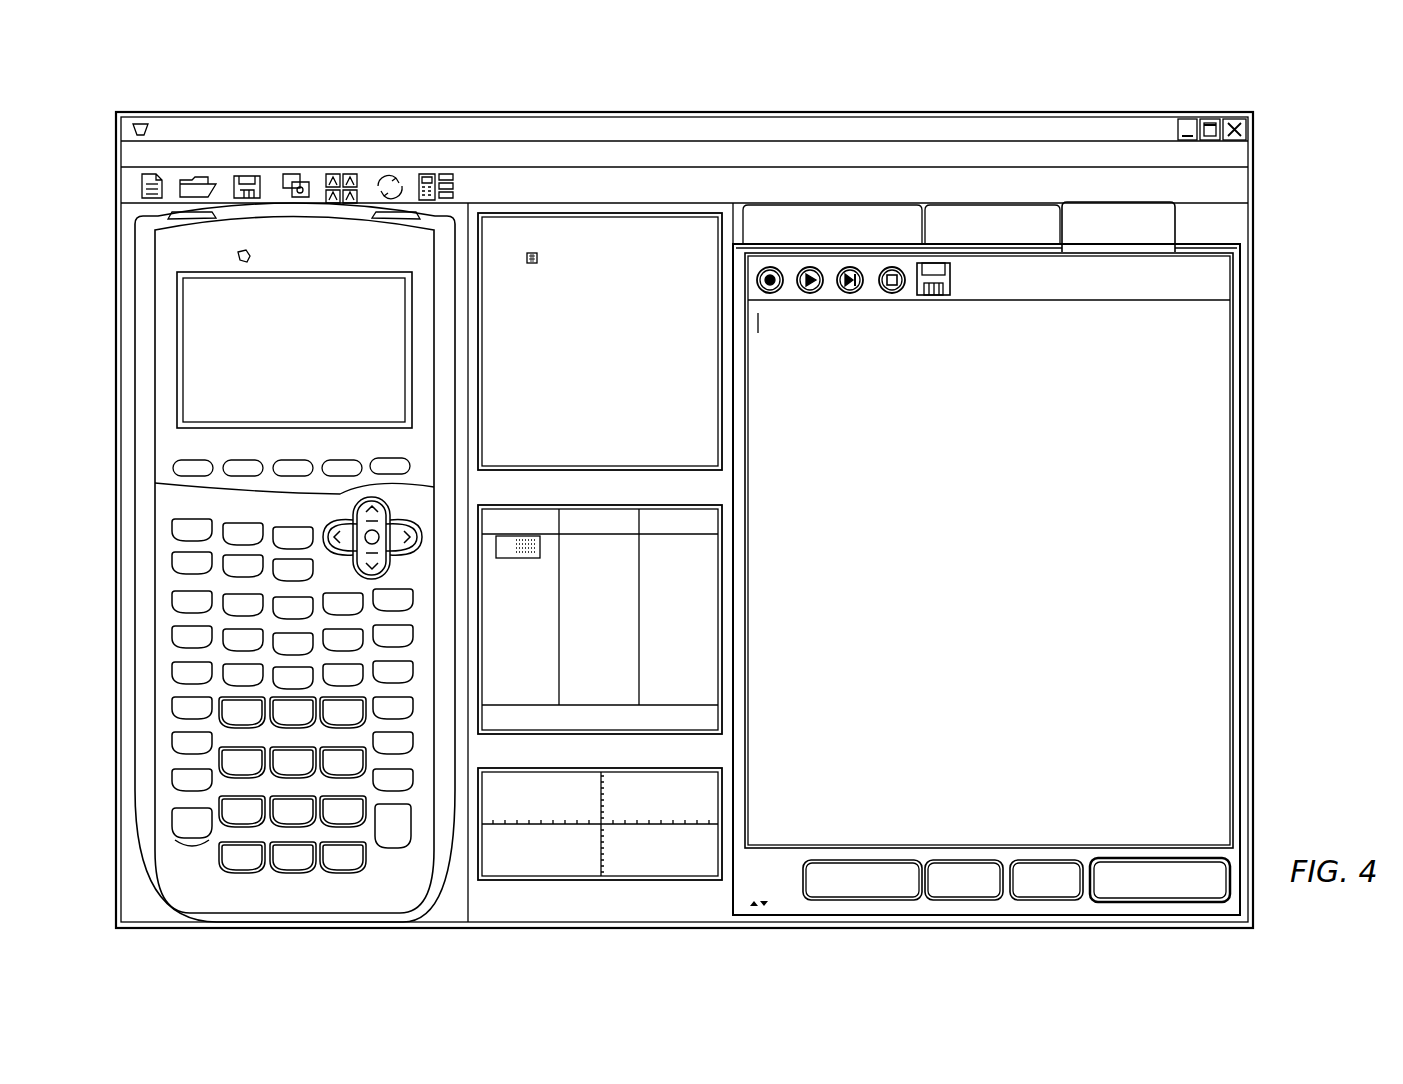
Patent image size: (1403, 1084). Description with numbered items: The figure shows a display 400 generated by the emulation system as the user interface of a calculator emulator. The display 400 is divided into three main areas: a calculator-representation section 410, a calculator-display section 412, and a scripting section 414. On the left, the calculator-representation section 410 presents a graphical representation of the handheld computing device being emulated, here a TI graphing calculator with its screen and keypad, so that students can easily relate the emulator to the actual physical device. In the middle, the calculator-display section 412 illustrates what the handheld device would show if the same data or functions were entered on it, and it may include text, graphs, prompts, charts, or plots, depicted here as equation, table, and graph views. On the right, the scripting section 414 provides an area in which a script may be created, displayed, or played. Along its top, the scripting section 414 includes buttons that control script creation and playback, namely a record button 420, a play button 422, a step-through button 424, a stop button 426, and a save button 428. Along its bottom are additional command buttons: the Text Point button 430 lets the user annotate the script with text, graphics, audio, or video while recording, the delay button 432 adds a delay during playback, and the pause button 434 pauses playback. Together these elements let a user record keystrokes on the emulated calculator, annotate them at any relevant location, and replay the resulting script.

The display 400 is at (1316, 203).
The calculator-representation section 410 is at (135, 107).
The calculator-display section 412 is at (478, 107).
The scripting section 414 is at (1248, 107).
The record button 420 is at (770, 294).
The play button 422 is at (810, 294).
The step-through button 424 is at (850, 294).
The stop button 426 is at (892, 294).
The save button 428 is at (951, 280).
The Text Point button 430 is at (864, 860).
The delay button 432 is at (967, 860).
The pause button 434 is at (1046, 860).